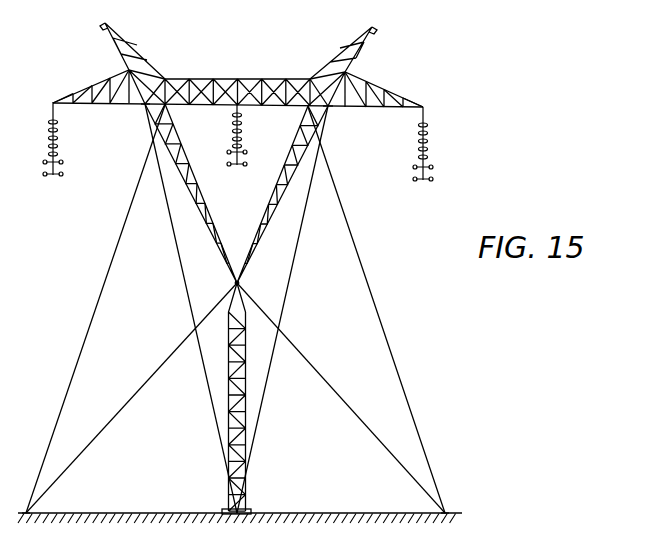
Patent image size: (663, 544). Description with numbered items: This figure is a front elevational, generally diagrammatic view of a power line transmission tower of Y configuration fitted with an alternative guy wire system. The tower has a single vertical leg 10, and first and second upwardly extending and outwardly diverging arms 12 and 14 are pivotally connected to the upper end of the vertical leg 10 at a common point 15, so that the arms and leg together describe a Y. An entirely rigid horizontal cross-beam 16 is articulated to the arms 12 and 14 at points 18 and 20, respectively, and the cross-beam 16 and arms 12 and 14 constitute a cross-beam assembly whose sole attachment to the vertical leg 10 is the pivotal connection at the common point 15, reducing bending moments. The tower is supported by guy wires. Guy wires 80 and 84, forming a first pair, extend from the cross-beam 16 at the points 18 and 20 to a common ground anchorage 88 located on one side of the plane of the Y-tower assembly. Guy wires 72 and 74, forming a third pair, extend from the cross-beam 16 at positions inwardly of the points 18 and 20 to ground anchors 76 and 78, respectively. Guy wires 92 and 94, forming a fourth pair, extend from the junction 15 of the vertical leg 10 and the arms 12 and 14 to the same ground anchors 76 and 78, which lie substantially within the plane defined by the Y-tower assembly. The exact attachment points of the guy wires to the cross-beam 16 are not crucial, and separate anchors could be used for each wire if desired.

The vertical leg 10 is at (227, 430).
The arm 12 is at (258, 216).
The arm 14 is at (198, 188).
The common point 15 is at (240, 284).
The horizontal cross-beam 16 is at (219, 76).
The point 18 is at (329, 108).
The point 20 is at (145, 105).
The guy wire 72 is at (373, 280).
The guy wire 74 is at (109, 269).
The ground anchor 76 is at (442, 512).
The ground anchor 78 is at (35, 507).
The guy wire 80 is at (291, 280).
The guy wire 84 is at (186, 290).
The common ground anchorage 88 is at (248, 510).
The guy wire 92 is at (350, 406).
The guy wire 94 is at (136, 395).